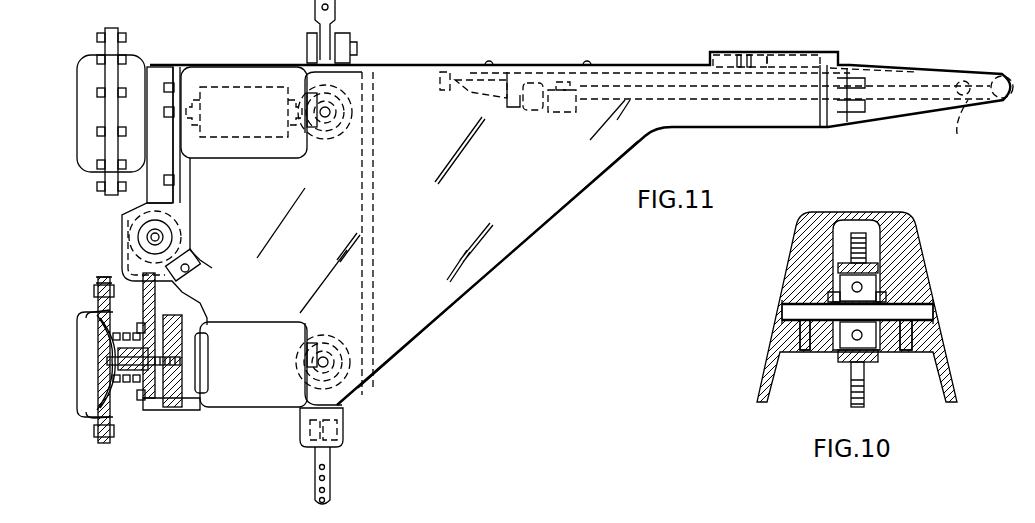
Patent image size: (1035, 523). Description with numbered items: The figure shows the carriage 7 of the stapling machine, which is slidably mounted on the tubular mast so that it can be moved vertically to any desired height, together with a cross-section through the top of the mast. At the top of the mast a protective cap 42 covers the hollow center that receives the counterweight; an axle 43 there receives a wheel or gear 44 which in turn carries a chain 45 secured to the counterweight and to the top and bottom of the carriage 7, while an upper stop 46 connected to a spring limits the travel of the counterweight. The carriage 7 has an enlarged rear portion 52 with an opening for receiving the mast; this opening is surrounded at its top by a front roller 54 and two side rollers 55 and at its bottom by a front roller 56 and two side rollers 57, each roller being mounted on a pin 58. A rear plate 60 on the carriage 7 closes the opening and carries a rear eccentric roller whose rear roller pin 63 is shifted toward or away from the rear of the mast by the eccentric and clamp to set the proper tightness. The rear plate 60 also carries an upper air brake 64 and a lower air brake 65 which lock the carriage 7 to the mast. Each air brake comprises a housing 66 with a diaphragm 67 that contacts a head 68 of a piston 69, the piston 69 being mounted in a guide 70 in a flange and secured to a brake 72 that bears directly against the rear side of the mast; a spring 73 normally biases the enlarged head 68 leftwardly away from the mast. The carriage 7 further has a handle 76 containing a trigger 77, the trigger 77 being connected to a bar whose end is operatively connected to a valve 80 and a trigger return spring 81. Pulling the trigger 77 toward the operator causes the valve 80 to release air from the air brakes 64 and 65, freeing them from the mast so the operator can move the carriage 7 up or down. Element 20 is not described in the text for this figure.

In FIG. 11, the carriage 7 is at (553, 211).
In FIG. 11, the cap 20 is at (100, 311).
In FIG. 10, the protective cap 42 is at (940, 347).
In FIG. 10, the axle 43 is at (782, 310).
In FIG. 10, the wheel or gear 44 is at (873, 258).
In FIG. 10, the chain 45 is at (848, 393).
In FIG. 11, the upper stop 46 is at (200, 251).
In FIG. 11, the enlarged rear portion 52 is at (474, 262).
In FIG. 11, the front roller 54 is at (355, 108).
In FIG. 11, the side roller 55 is at (250, 85).
In FIG. 11, the front roller 56 is at (368, 386).
In FIG. 11, the side roller 57 is at (205, 380).
In FIG. 11, the pin 58 is at (326, 130).
In FIG. 11, the rear plate 60 is at (147, 190).
In FIG. 11, the rear roller pin 63 is at (166, 232).
In FIG. 11, the upper air brake 64 is at (77, 111).
In FIG. 11, the lower air brake 65 is at (74, 330).
In FIG. 11, the housing 66 is at (132, 68).
In FIG. 11, the diaphragm 67 is at (92, 347).
In FIG. 11, the head 68 is at (95, 378).
In FIG. 11, the piston 69 is at (110, 360).
In FIG. 11, the guide 70 is at (137, 378).
In FIG. 11, the brake 72 is at (915, 71).
In FIG. 11, the spring 73 is at (107, 411).
In FIG. 11, the handle 76 is at (1010, 76).
In FIG. 11, the trigger 77 is at (973, 124).
In FIG. 11, the valve 80 is at (548, 115).
In FIG. 11, the trigger return spring 81 is at (463, 85).